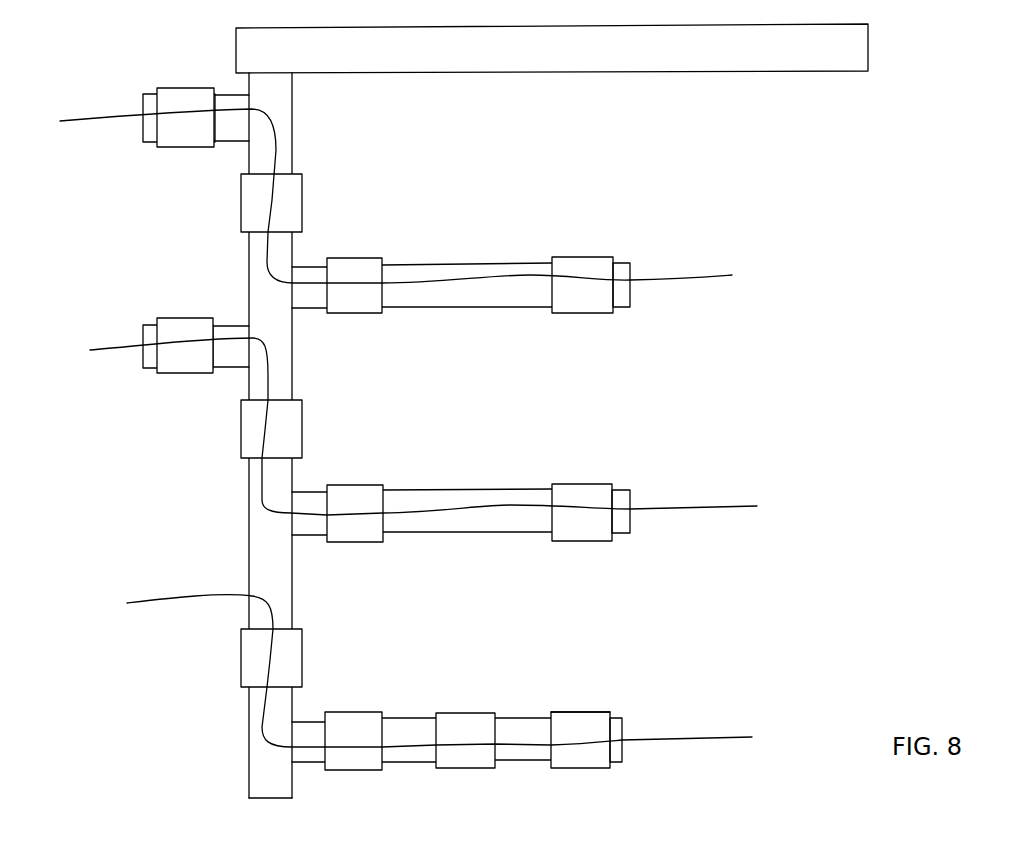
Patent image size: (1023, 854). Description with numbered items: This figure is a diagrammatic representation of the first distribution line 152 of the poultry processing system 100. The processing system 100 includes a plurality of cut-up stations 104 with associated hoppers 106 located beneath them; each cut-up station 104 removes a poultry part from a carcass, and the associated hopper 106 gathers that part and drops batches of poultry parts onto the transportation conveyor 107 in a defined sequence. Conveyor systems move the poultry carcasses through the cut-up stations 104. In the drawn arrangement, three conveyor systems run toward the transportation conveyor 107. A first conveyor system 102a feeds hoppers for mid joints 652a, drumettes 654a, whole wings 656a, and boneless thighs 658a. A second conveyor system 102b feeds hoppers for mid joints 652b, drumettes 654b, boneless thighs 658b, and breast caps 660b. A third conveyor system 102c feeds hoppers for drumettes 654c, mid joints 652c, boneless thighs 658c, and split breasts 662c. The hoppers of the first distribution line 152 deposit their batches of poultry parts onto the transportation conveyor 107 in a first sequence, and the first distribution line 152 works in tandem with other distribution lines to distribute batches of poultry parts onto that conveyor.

The processing system 100 is at (800, 283).
The first distribution line 152 is at (667, 430).
The transportation conveyor 107 is at (308, 147).
The first conveyor system 102a is at (718, 745).
The second conveyor system 102b is at (730, 512).
The third conveyor system 102c is at (690, 280).
The cut-up station 104 is at (630, 700).
The hopper 106 is at (602, 695).
The mid joints hopper 652a is at (582, 770).
The mid joints hopper 652b is at (583, 545).
The mid joints hopper 652c is at (587, 316).
The drumettes hopper 654a is at (470, 775).
The drumettes hopper 654b is at (355, 545).
The drumettes hopper 654c is at (360, 316).
The whole wings hopper 656a is at (357, 770).
The boneless thighs hopper 658a is at (302, 658).
The boneless thighs hopper 658b is at (302, 432).
The boneless thighs hopper 658c is at (302, 207).
The breast caps hopper 660b is at (188, 318).
The split breasts hopper 662c is at (183, 147).